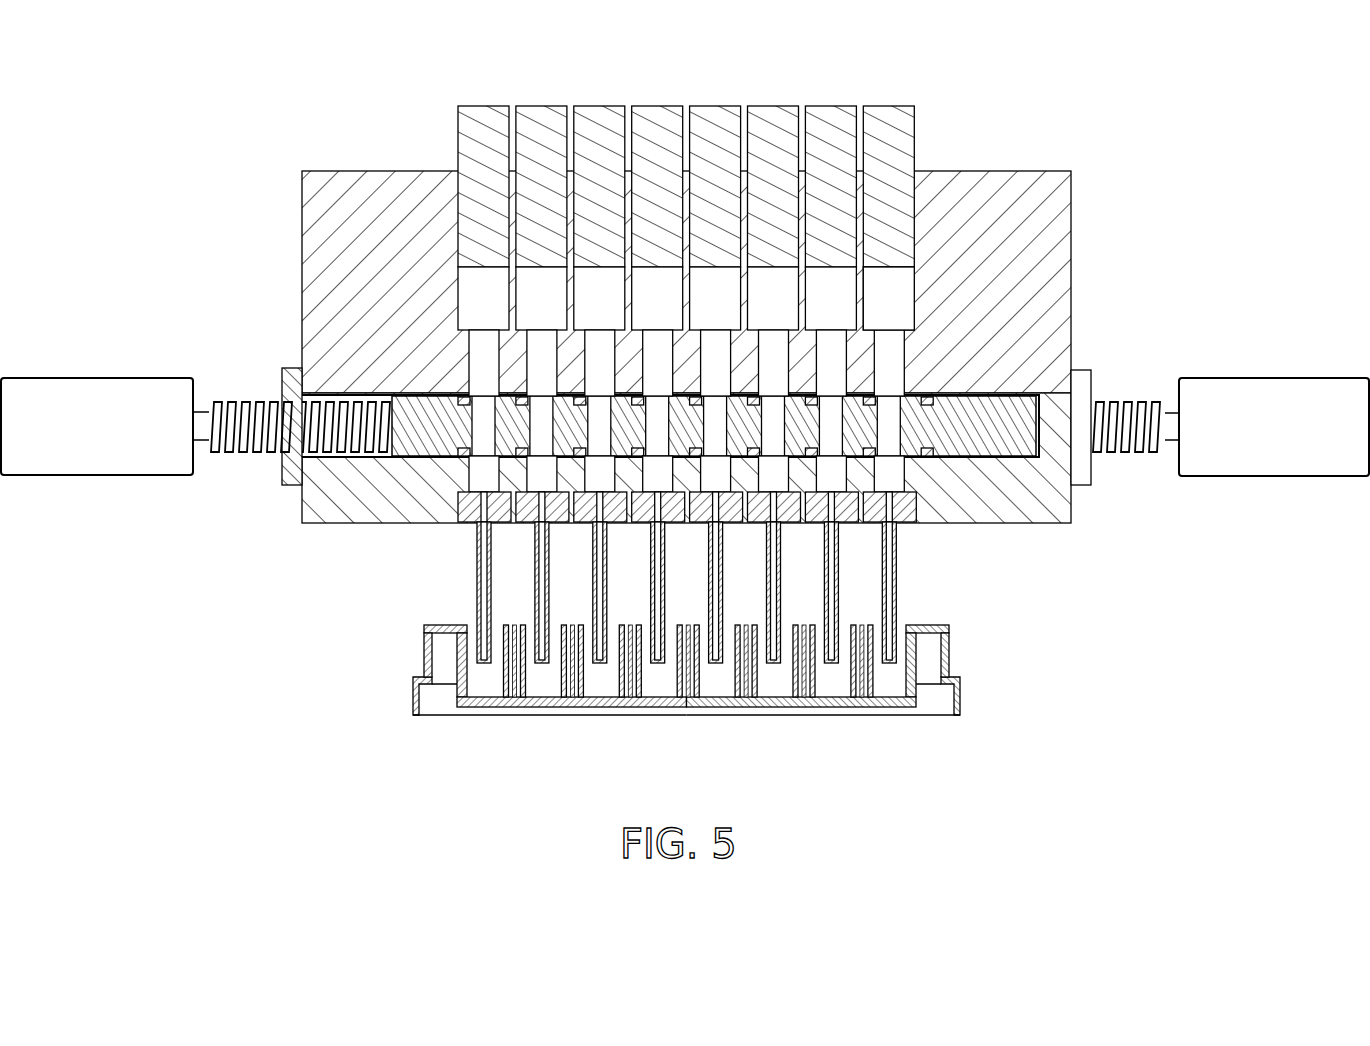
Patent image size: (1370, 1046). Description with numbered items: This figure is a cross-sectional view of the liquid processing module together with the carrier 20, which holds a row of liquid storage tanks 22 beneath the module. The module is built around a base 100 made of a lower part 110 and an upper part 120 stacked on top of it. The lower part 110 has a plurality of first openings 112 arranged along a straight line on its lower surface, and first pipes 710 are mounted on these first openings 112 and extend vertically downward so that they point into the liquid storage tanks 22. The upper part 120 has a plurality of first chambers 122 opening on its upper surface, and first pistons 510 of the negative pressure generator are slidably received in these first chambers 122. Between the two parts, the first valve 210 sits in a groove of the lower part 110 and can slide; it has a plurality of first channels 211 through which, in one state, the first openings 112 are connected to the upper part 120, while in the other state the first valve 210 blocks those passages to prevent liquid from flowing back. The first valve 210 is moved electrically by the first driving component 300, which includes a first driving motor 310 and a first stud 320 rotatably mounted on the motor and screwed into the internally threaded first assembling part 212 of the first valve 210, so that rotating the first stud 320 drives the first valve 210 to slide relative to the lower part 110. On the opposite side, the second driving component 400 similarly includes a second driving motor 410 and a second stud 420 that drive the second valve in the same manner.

The base 100 is at (733, 320).
The lower part 110 is at (1057, 505).
The first openings 112 is at (920, 532).
The upper part 120 is at (1055, 228).
The first chambers 122 is at (882, 303).
The first valve 210 is at (678, 462).
The first channels 211 is at (1017, 442).
The first assembling part 212 is at (348, 405).
The first driving component 300 is at (146, 480).
The first driving motor 310 is at (137, 450).
The first stud 320 is at (251, 470).
The second driving component 400 is at (1231, 378).
The second driving motor 410 is at (1243, 405).
The second stud 420 is at (1131, 387).
The first pistons 510 is at (888, 108).
The first pipes 710 is at (895, 592).
The carrier 20 is at (958, 700).
The liquid storage tanks 22 is at (886, 684).